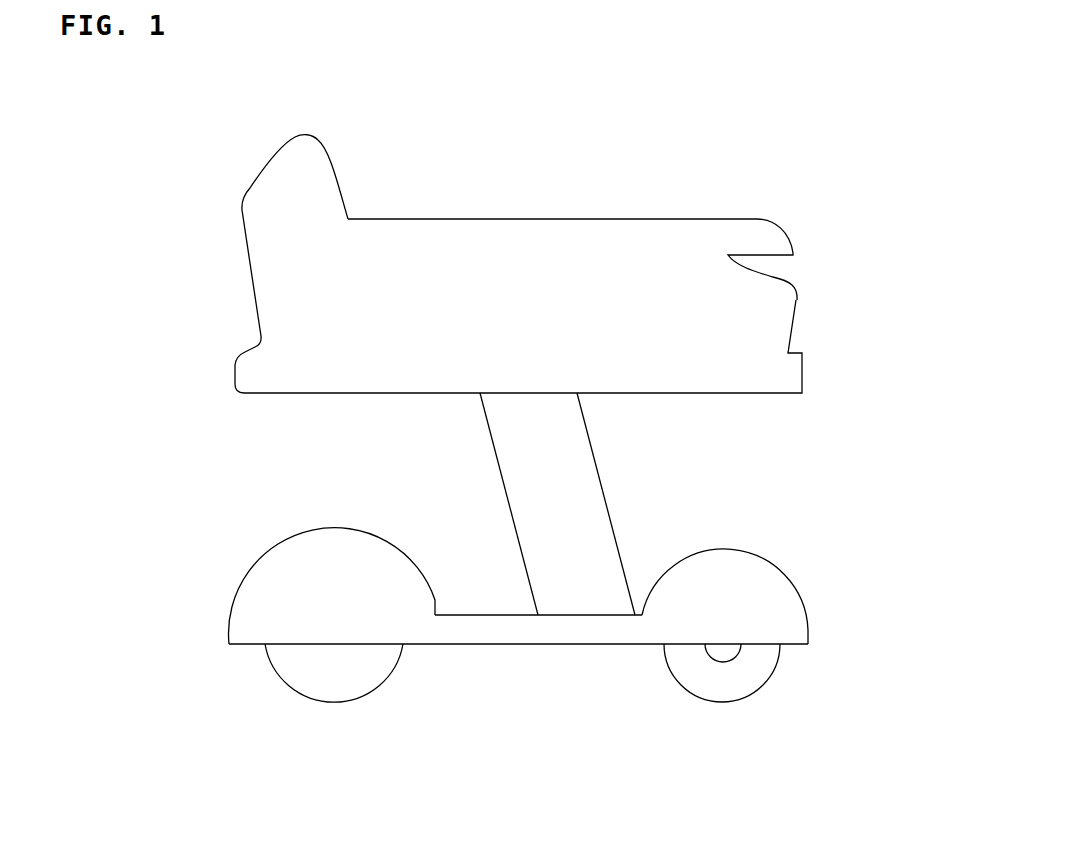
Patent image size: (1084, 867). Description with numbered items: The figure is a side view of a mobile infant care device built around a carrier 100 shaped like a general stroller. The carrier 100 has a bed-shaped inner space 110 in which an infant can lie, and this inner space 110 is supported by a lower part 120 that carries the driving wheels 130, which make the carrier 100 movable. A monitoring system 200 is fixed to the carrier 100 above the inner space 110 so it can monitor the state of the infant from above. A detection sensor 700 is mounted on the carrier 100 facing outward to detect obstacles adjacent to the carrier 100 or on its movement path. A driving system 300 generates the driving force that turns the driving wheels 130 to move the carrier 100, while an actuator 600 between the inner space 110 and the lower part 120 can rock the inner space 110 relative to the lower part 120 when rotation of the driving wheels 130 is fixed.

The carrier 100 is at (230, 312).
The inner space 110 is at (600, 218).
The monitoring system 200 is at (343, 183).
The detection sensor 700 is at (780, 258).
The actuator 600 is at (607, 505).
The lower part 120 is at (517, 633).
The driving system 300 is at (275, 572).
The driving wheels 130 is at (338, 690).